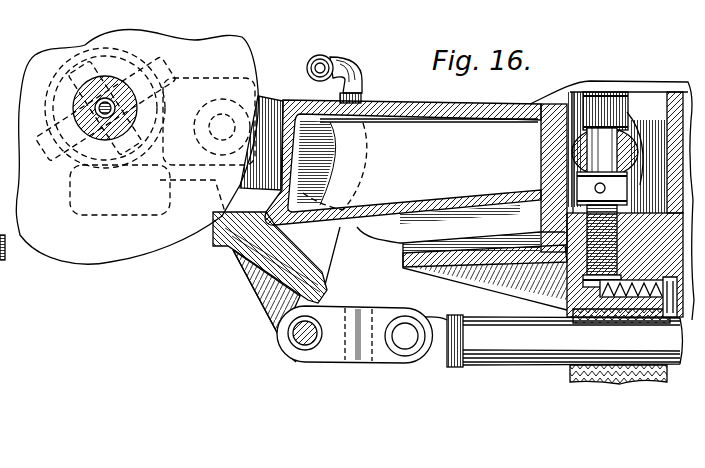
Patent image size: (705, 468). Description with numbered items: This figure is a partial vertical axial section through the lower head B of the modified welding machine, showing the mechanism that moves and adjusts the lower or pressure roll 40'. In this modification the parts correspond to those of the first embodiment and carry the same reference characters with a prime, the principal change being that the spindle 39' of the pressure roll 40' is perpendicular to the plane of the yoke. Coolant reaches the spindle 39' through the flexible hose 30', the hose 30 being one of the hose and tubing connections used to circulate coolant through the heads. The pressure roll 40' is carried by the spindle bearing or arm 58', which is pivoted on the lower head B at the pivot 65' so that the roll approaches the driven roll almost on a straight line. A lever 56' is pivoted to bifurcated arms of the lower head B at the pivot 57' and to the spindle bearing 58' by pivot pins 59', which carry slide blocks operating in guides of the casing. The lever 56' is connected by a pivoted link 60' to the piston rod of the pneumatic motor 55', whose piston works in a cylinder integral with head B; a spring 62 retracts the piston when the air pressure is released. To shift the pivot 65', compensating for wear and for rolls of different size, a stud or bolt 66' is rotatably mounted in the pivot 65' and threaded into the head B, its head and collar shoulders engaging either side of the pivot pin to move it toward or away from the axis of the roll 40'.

The spindle 39' is at (79, 76).
The pressure roll 40' is at (151, 138).
The hose 30' is at (182, 184).
The hose 30 is at (452, 7).
The pivot pin 59' is at (229, 117).
The spindle bearing 58' is at (416, 148).
The pivot 57' is at (349, 166).
The lever 56' is at (272, 287).
The pivoted link 60' is at (355, 349).
The spring 62 is at (575, 289).
The stud or bolt 66' is at (603, 170).
The pivot 65' is at (647, 137).
The pneumatic motor 55' is at (649, 297).
The lower head B is at (673, 85).